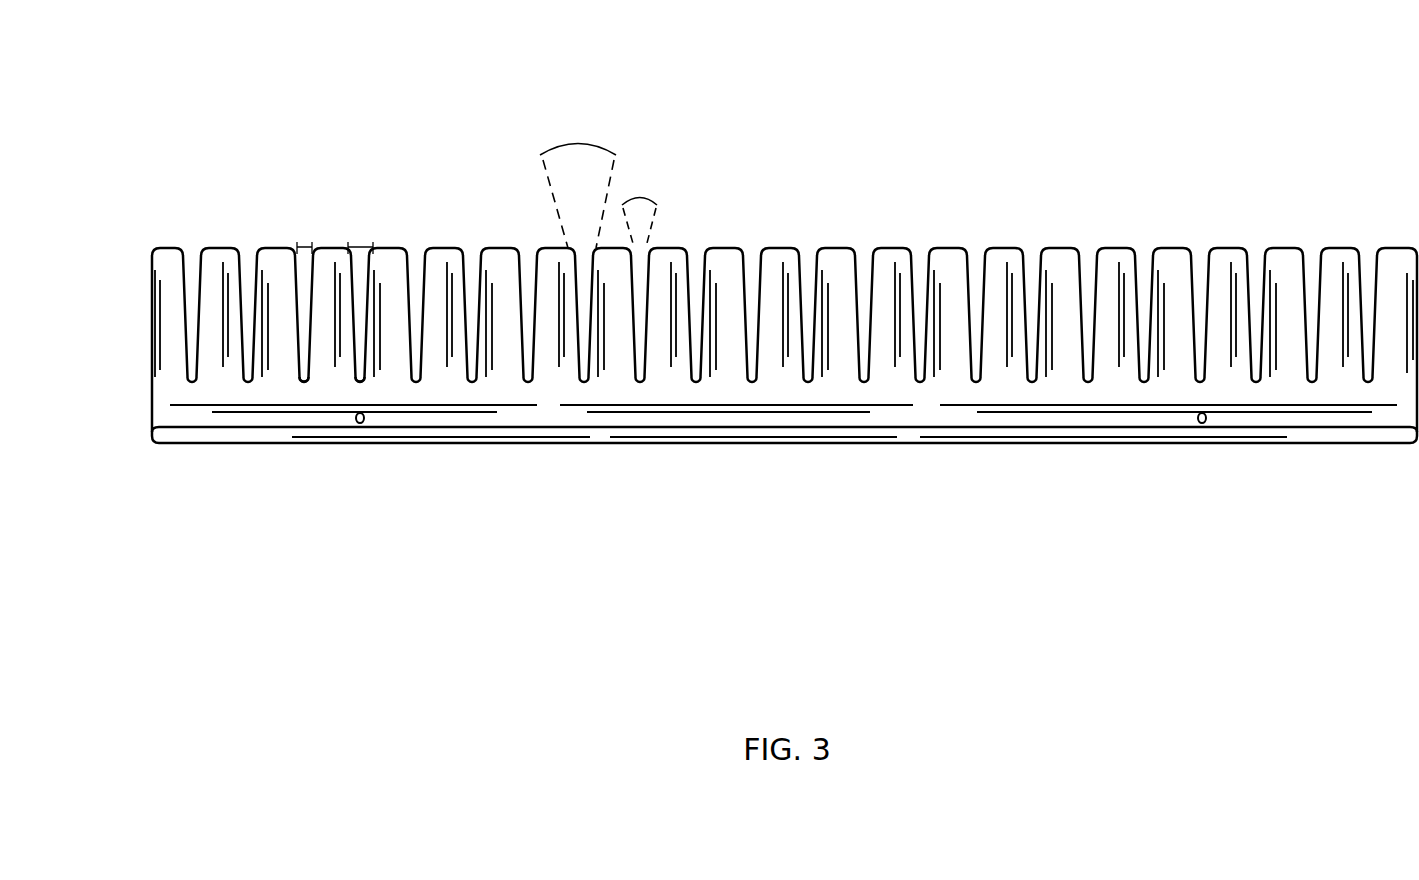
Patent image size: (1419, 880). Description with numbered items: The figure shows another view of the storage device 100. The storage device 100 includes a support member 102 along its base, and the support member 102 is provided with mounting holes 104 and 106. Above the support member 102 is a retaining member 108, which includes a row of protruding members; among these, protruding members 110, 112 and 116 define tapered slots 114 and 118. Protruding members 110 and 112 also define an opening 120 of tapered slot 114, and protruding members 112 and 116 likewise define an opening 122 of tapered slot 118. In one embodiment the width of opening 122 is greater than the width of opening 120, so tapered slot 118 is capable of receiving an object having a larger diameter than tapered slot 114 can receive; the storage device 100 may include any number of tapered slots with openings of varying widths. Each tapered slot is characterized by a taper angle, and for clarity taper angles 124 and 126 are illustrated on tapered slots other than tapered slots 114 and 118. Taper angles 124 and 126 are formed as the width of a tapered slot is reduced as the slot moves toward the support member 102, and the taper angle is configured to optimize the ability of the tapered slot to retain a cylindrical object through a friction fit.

The storage device 100 is at (787, 110).
The support member 102 is at (1360, 455).
The mounting hole 104 is at (351, 444).
The mounting hole 106 is at (1214, 448).
The retaining member 108 is at (139, 257).
The protruding member 110 is at (282, 235).
The protruding member 112 is at (328, 235).
The tapered slot 114 is at (294, 271).
The protruding member 116 is at (393, 235).
The tapered slot 118 is at (370, 271).
The opening 120 is at (305, 235).
The opening 122 is at (360, 235).
The taper angle 124 is at (576, 132).
The taper angle 126 is at (655, 186).